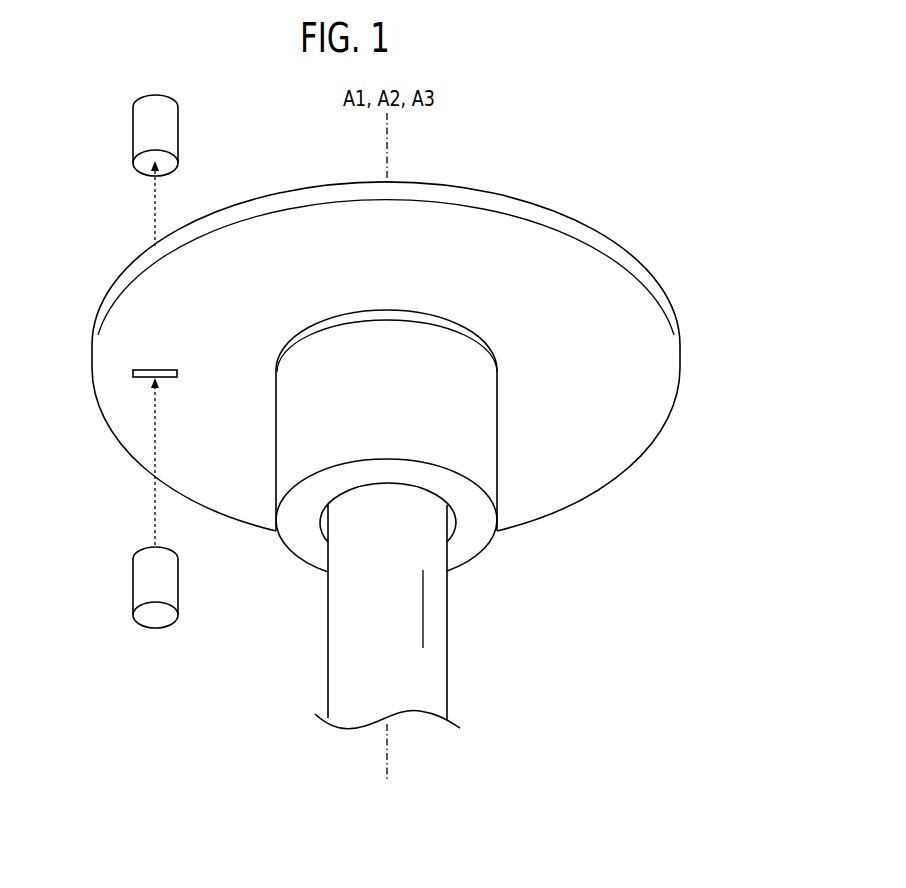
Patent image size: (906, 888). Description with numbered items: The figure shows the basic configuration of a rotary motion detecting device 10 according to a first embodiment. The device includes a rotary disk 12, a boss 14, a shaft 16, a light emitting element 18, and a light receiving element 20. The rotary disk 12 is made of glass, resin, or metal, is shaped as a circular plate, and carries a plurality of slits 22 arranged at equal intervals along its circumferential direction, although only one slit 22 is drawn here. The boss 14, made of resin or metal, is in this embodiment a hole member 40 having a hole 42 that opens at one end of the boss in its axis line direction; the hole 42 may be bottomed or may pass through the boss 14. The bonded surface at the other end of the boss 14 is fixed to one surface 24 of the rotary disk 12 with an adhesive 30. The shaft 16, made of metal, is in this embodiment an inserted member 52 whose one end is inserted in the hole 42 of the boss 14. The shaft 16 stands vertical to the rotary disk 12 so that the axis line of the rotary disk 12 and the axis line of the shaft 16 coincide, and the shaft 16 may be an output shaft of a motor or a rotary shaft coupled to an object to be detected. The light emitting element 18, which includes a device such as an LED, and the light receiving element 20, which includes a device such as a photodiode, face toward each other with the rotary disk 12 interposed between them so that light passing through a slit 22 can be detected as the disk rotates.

The rotary motion detecting device 10 is at (560, 91).
The rotary disk 12 is at (358, 356).
The boss 14 is at (439, 435).
The hole member 40 is at (439, 435).
The shaft 16 is at (437, 616).
The inserted member 52 is at (432, 681).
The light emitting element 18 is at (143, 582).
The light receiving element 20 is at (143, 128).
The slit 22 is at (160, 368).
The surface of the rotary disk 24 is at (124, 343).
The adhesive 30 is at (411, 313).
The hole 42 is at (448, 535).